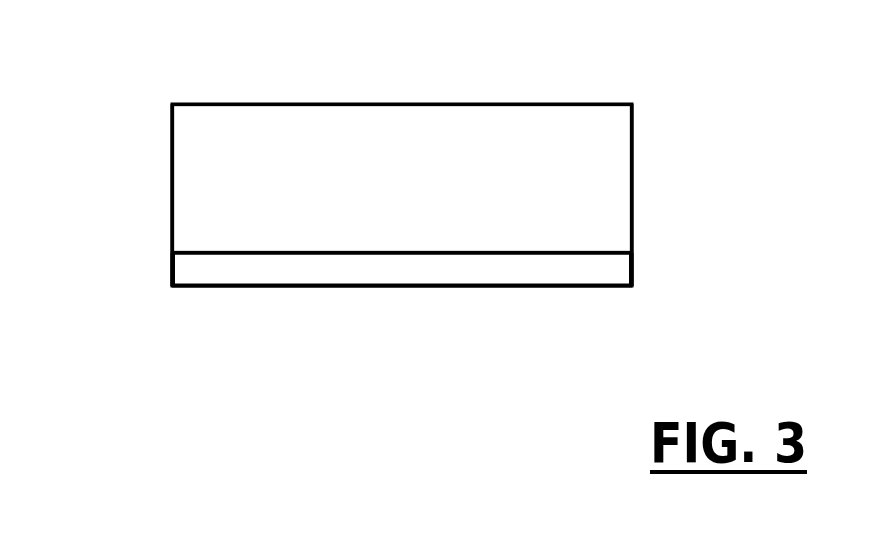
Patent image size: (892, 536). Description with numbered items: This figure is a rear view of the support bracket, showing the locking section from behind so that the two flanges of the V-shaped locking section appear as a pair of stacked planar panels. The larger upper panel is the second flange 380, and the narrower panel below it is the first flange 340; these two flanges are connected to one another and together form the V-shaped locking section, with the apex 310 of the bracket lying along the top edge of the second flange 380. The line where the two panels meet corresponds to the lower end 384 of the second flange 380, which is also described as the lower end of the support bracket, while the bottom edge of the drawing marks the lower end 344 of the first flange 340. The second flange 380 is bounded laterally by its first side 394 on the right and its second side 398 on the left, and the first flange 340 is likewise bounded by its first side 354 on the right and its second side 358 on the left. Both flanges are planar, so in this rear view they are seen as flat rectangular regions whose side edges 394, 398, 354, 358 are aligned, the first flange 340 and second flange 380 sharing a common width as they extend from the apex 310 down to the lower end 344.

The apex 310 is at (364, 106).
The second flange 380 is at (383, 188).
The first flange 340 is at (473, 264).
The lower end 384 is at (385, 254).
The lower end 344 is at (267, 291).
The second side 398 is at (178, 182).
The first side 394 is at (632, 187).
The second side 358 is at (176, 269).
The first side 354 is at (633, 281).